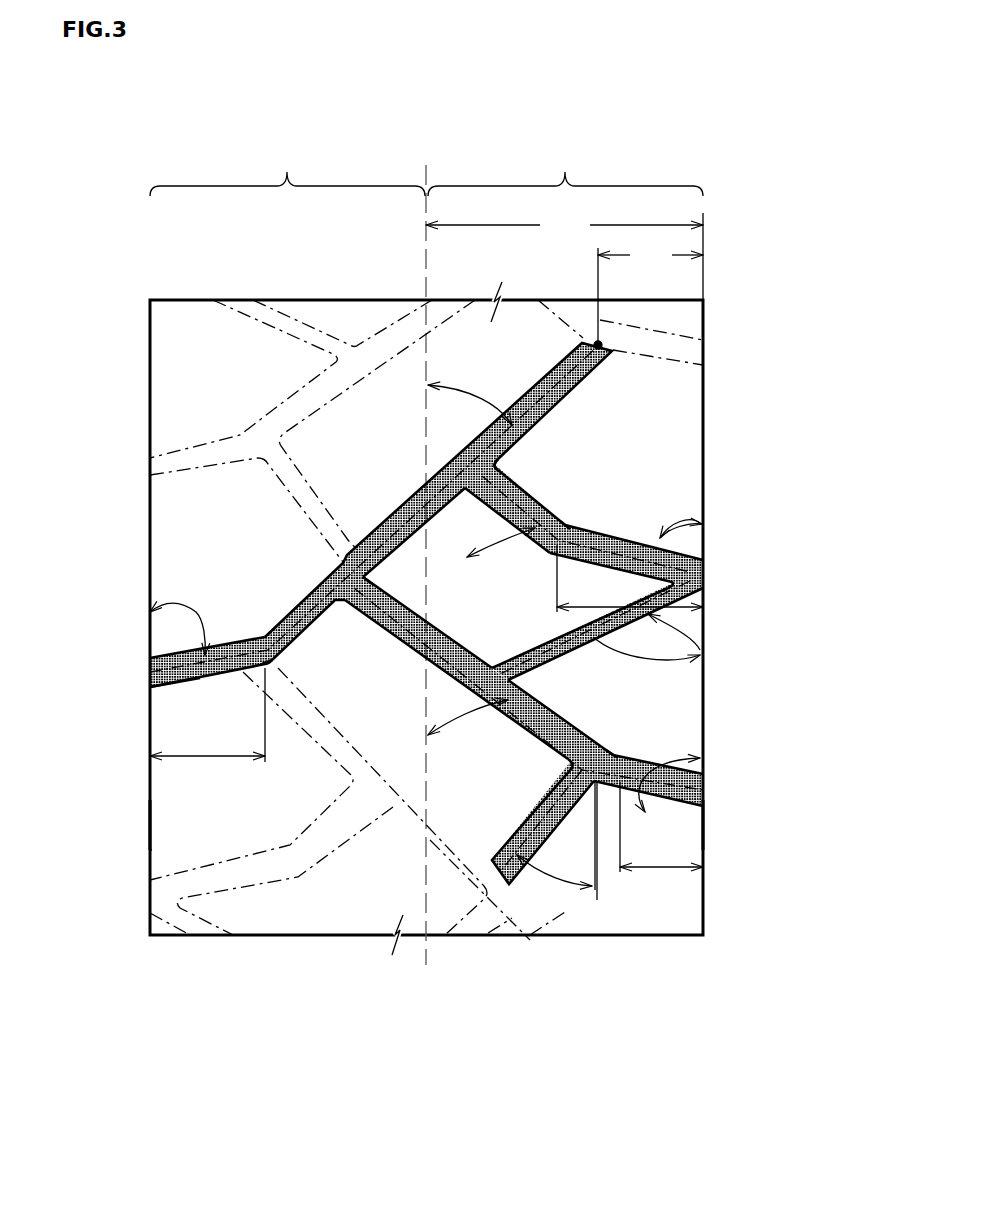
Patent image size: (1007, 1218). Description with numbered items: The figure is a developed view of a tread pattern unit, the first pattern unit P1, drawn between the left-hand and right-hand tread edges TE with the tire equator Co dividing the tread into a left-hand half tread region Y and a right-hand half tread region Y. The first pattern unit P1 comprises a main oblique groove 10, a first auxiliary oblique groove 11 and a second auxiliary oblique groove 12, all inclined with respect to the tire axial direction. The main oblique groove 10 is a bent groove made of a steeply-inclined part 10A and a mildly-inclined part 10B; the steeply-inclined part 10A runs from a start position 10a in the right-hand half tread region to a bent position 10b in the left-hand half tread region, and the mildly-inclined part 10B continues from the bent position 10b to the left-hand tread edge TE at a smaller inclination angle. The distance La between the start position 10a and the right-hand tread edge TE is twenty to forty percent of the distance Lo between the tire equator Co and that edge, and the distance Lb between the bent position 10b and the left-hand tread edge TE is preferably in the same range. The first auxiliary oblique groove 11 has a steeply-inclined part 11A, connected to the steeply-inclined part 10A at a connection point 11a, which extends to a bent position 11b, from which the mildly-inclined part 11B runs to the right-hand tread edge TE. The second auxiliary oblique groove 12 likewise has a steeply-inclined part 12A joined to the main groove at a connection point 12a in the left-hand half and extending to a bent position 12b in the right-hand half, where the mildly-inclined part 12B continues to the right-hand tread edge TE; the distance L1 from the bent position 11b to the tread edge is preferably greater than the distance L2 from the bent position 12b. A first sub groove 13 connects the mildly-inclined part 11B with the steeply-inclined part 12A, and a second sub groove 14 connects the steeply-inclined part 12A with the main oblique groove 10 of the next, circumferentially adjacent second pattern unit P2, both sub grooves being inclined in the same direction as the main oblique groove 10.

The main oblique groove 10 is at (78, 460).
The steeply-inclined part 10A is at (318, 585).
The mildly-inclined part 10B is at (200, 648).
The start position 10a is at (278, 660).
The bent position 10b is at (238, 676).
The first auxiliary oblique groove 11 is at (770, 395).
The steeply-inclined part 11A is at (578, 485).
The mildly-inclined part 11B is at (642, 497).
The connection point 11a is at (506, 460).
The bent position 11b is at (575, 516).
The second auxiliary oblique groove 12 is at (773, 680).
The steeply-inclined part 12A is at (568, 740).
The mildly-inclined part 12B is at (668, 768).
The connection point 12a is at (380, 582).
The bent position 12b is at (618, 752).
The first sub groove 13 is at (618, 665).
The second sub groove 14 is at (556, 848).
The first pattern unit P1 is at (700, 395).
The second pattern unit P2 is at (172, 848).
The tread edge TE is at (150, 824).
The tire equator Co is at (426, 548).
The half tread region Y is at (426, 168).
The distance between tire equator and tread edge Lo is at (564, 256).
The distance between start position and tread edge La is at (648, 297).
The distance between bent position and tread edge Lb is at (200, 768).
The distance from bent position of first auxiliary oblique groove to tread edge L1 is at (703, 628).
The distance from bent position of second auxiliary oblique groove to tread edge L2 is at (703, 870).